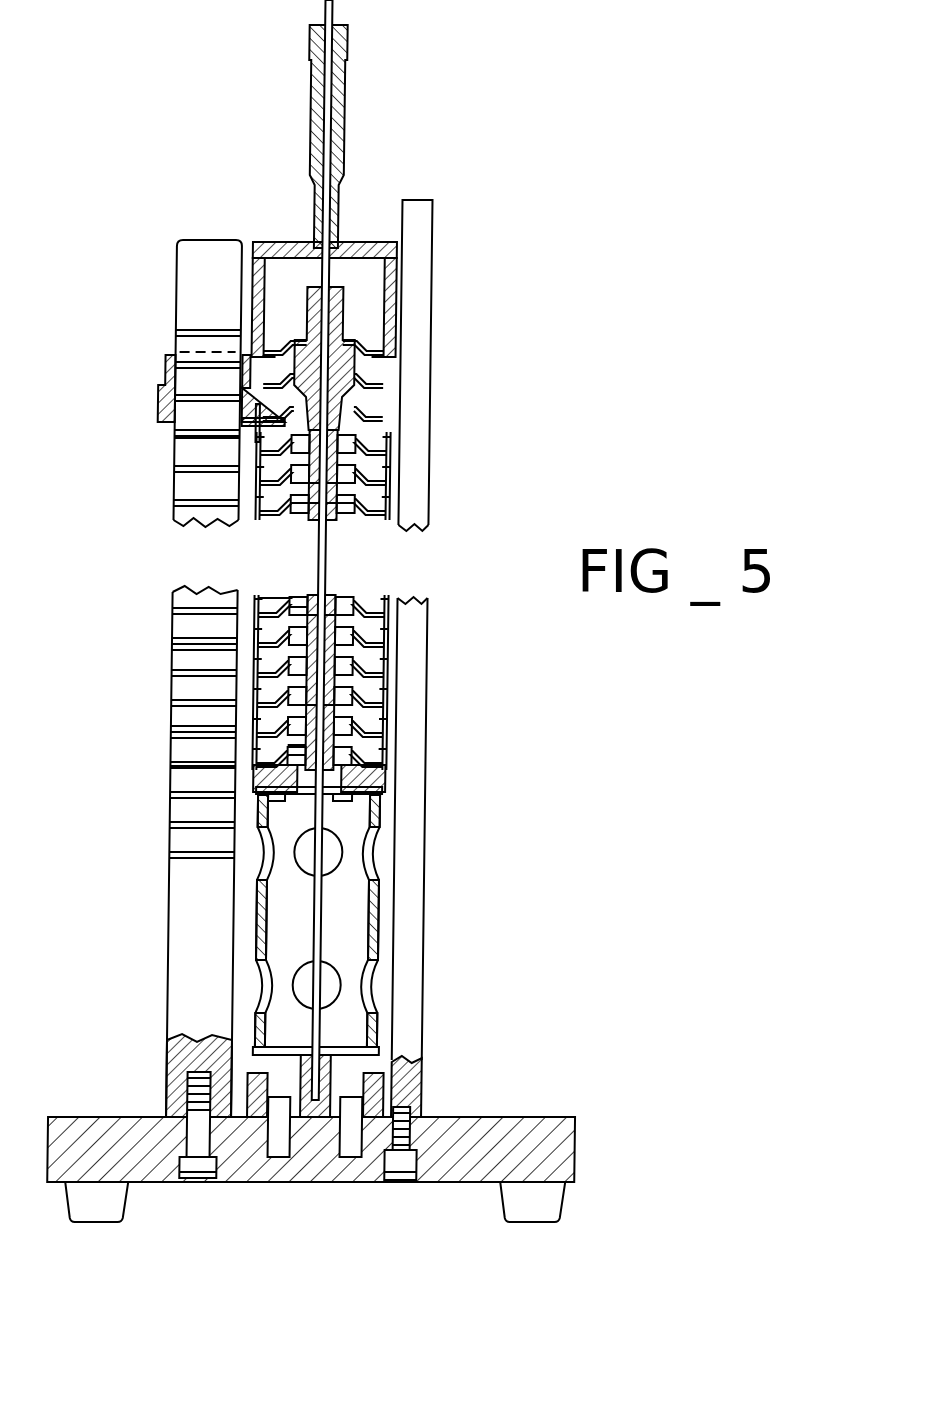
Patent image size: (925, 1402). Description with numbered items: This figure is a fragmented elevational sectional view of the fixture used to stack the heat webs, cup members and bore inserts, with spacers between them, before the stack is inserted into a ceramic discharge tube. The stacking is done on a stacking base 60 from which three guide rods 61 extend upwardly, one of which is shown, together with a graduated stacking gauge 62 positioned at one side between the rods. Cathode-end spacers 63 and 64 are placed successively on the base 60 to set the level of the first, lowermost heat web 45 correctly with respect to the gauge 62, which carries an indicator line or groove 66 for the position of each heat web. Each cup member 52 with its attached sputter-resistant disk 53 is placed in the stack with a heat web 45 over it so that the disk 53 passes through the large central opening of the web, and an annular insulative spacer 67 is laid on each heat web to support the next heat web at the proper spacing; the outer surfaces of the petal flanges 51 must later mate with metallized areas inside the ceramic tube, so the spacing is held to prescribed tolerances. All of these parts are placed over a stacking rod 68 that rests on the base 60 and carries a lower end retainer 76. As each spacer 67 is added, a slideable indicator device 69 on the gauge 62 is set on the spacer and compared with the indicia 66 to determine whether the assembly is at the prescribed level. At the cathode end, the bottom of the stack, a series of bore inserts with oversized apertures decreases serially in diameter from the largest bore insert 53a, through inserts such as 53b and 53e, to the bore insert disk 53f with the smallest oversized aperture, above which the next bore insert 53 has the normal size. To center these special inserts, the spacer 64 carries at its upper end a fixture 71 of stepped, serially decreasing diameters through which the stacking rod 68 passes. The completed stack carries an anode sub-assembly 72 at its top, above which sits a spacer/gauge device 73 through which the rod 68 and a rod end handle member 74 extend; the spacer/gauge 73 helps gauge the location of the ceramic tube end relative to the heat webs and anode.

The heat web 45 is at (394, 485).
The petal flange 51 is at (403, 641).
The cup member 52 is at (391, 500).
The sputter-resistant disk 53 is at (300, 479).
The largest diameter bore insert 53a is at (309, 745).
The bore insert 53b is at (299, 745).
The bore insert 53e is at (300, 606).
The bore insert disk 53f is at (307, 597).
The stacking base 60 is at (549, 1130).
The guide rod 61 is at (436, 880).
The stacking gauge 62 is at (176, 505).
The spacer 63 is at (391, 1090).
The spacer 64 is at (391, 920).
The indicator line 66 is at (246, 450).
The insulative spacer 67 is at (394, 457).
The stacking rod 68 is at (333, 277).
The slideable indicator device 69 is at (165, 375).
The fixture 71 is at (344, 680).
The anode sub-assembly 72 is at (442, 347).
The spacer/gauge device 73 is at (383, 243).
The rod end handle member 74 is at (339, 113).
The lower end retainer 76 is at (344, 1070).